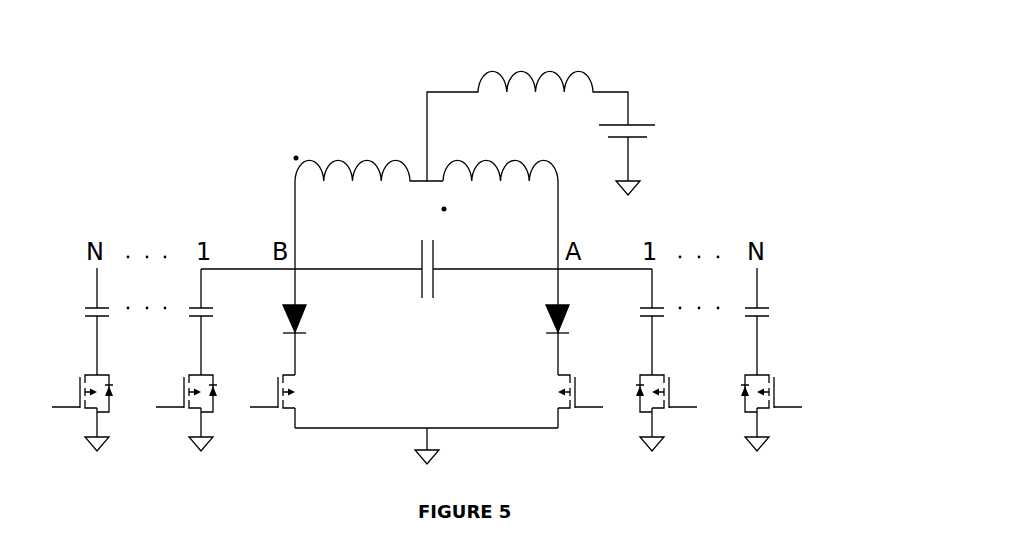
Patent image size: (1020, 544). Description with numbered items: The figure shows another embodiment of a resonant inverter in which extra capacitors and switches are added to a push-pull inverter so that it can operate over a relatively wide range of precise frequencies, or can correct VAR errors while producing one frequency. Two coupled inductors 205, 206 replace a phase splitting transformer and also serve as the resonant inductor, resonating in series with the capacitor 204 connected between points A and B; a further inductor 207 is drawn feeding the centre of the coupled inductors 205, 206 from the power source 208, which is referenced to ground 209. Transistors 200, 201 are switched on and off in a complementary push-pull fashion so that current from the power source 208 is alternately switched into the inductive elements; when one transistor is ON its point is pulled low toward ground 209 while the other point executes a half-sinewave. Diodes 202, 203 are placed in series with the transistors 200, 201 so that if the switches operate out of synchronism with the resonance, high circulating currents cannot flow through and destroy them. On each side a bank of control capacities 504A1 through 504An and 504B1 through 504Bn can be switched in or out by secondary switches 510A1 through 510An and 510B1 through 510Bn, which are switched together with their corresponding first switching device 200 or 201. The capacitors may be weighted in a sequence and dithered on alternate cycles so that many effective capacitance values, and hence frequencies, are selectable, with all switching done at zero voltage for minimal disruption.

The transistor 200 is at (300, 390).
The transistor 201 is at (553, 390).
The diode 202 is at (316, 320).
The diode 203 is at (536, 320).
The capacitor 204 is at (423, 285).
The coupled inductor 205 is at (369, 153).
The coupled inductor 206 is at (500, 153).
The inductor 207 is at (527, 110).
The power source 208 is at (649, 150).
The ground 209 is at (549, 321).
The secondary switch 510Bn is at (102, 297).
The secondary switch 510B1 is at (192, 297).
The secondary switch 510A1 is at (662, 295).
The secondary switch 510An is at (768, 295).
The control capacity 504Bn is at (118, 408).
The control capacity 504B1 is at (220, 418).
The control capacity 504A1 is at (624, 409).
The control capacity 504An is at (735, 417).